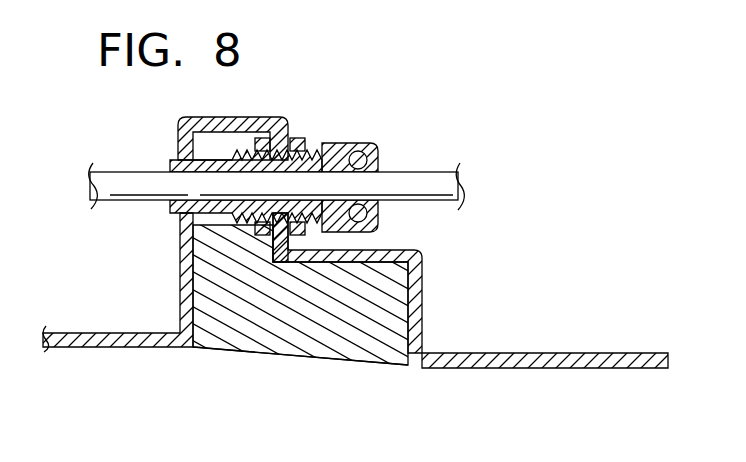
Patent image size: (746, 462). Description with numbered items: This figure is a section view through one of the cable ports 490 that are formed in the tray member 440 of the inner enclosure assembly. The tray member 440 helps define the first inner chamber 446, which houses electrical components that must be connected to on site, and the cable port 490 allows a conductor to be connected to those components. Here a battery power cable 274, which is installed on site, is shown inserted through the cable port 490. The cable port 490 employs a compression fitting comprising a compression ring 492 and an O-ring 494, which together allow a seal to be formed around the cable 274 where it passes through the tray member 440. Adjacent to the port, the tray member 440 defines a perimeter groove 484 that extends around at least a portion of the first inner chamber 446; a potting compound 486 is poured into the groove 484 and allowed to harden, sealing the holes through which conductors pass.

The battery power cable 274 is at (419, 183).
The tray member 440 is at (103, 347).
The first inner chamber 446 is at (133, 293).
The perimeter groove 484 is at (275, 350).
The potting compound 486 is at (249, 325).
The cable port 490 is at (347, 133).
The compression ring 492 is at (364, 143).
The O-ring 494 is at (378, 232).